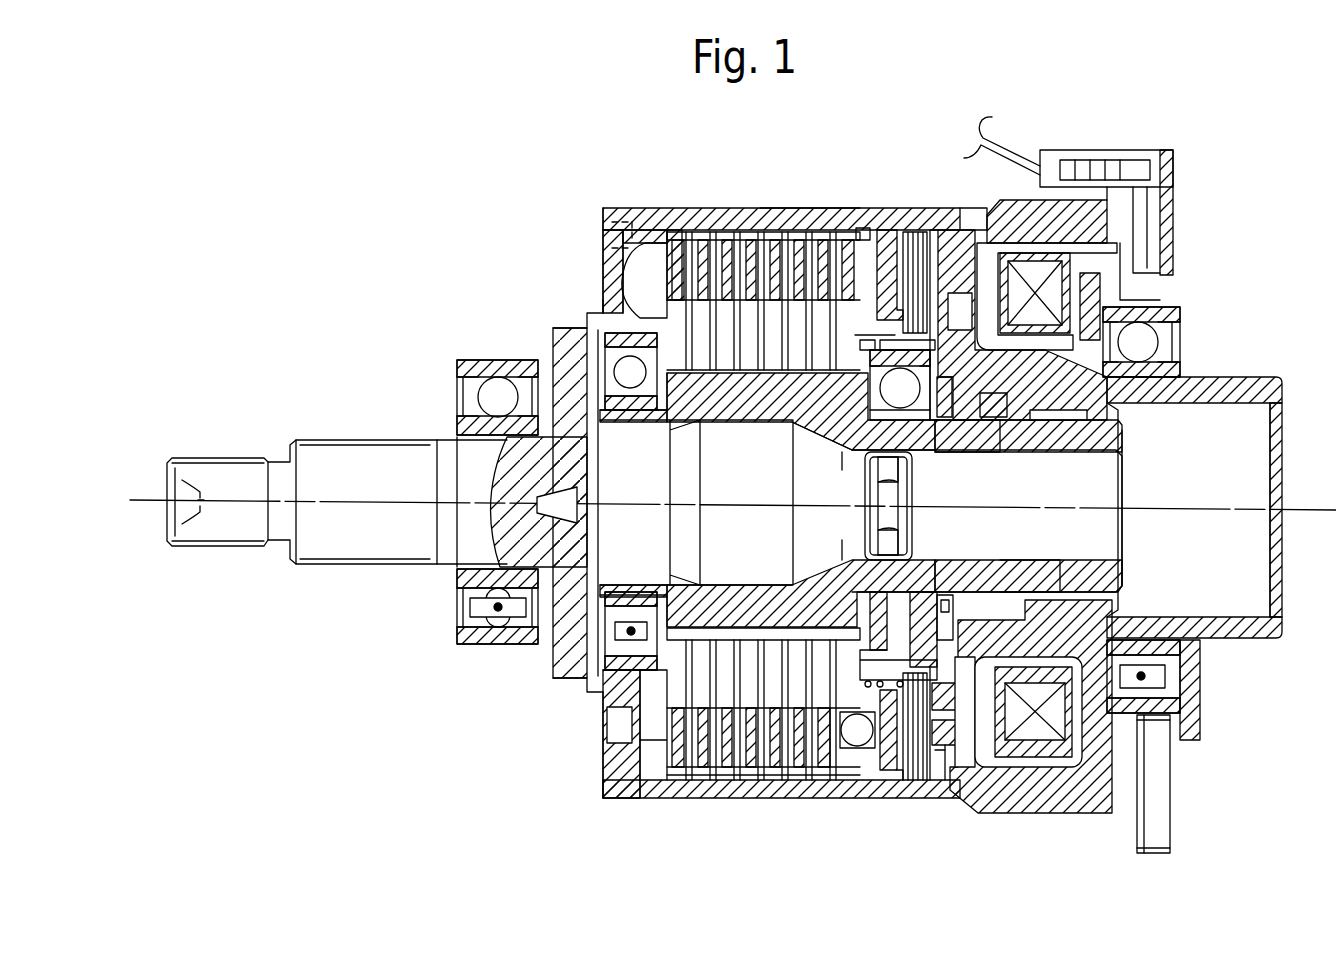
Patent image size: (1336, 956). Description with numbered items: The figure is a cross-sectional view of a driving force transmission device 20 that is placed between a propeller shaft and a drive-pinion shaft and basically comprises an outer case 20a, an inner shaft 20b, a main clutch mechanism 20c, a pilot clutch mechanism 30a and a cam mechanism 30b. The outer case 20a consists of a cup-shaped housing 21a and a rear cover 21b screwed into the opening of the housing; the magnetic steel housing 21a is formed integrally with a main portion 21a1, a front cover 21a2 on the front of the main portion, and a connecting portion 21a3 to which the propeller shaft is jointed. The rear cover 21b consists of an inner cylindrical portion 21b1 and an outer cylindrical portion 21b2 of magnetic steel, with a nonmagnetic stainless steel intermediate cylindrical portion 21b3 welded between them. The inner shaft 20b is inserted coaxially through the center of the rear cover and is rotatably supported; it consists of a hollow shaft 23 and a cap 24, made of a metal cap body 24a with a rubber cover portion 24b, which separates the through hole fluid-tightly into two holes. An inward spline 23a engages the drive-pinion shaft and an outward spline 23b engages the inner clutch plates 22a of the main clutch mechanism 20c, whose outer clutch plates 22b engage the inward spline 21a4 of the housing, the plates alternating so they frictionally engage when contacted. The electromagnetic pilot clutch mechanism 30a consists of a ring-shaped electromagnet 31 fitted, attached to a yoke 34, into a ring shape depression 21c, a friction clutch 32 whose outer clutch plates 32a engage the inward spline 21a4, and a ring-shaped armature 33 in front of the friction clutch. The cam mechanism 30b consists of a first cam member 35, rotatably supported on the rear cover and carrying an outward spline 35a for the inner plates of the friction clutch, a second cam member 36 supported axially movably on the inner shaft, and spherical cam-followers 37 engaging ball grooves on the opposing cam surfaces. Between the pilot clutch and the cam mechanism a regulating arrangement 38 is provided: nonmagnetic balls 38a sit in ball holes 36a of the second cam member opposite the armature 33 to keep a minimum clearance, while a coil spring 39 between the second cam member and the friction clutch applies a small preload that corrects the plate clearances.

The driving force transmission device 20 is at (1183, 200).
The outer case 20a is at (612, 208).
The inner shaft 20b is at (1128, 470).
The main clutch mechanism 20c is at (783, 226).
The housing 21a is at (600, 300).
The main portion 21a1 is at (728, 790).
The front cover 21a2 is at (603, 695).
The connecting portion 21a3 is at (357, 455).
The inward spline 21a4 is at (851, 228).
The rear cover 21b is at (1240, 632).
The inner cylindrical portion 21b1 is at (1225, 385).
The outer cylindrical portion 21b2 is at (1030, 240).
The intermediate cylindrical portion 21b3 is at (957, 235).
The ring shape depression 21c is at (1053, 287).
The inner clutch plates 22a is at (745, 380).
The outer clutch plates 22b is at (700, 240).
The hollow shaft 23 is at (1125, 520).
The inward spline 23a is at (1045, 562).
The outward spline 23b is at (638, 424).
The cap 24 is at (915, 492).
The cap body 24a is at (900, 484).
The cover portion 24b is at (900, 525).
The pilot clutch mechanism 30a is at (905, 232).
The cam mechanism 30b is at (932, 590).
The electromagnet 31 is at (1040, 735).
The friction clutch 32 is at (911, 790).
The outer clutch plate 32a is at (942, 755).
The armature 33 is at (888, 770).
The yoke 34 is at (1185, 732).
The first cam member 35 is at (947, 425).
The outward spline 35a is at (793, 426).
The second cam member 36 is at (860, 245).
The ball hole 36a is at (810, 700).
The cam-followers 37 is at (823, 506).
The ball bearing 38 is at (895, 377).
The balls 38a is at (855, 748).
The coil spring 39 is at (872, 628).